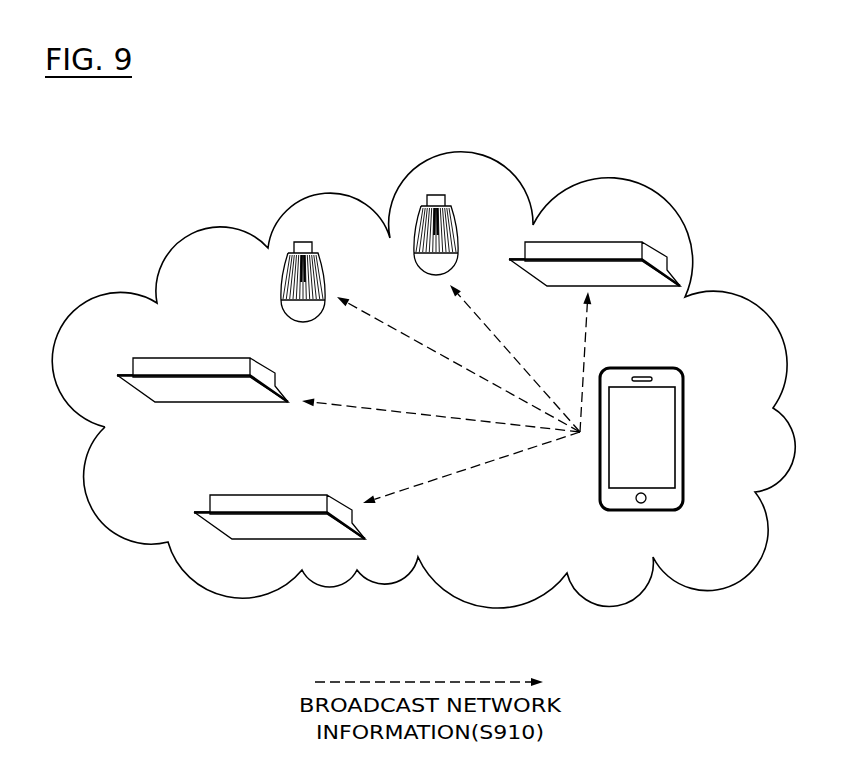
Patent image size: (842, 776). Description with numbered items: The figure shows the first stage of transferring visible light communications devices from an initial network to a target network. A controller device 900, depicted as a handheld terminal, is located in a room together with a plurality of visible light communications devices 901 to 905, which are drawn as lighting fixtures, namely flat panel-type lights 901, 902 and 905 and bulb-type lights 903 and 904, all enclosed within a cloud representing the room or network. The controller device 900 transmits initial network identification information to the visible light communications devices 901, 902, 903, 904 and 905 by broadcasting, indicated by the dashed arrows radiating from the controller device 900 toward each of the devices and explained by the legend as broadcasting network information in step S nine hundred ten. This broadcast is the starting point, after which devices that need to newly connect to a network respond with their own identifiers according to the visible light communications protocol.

The controller device 900 is at (632, 465).
The visible light communications device 901 is at (250, 525).
The visible light communications device 902 is at (185, 357).
The visible light communications device 903 is at (303, 240).
The visible light communications device 904 is at (435, 193).
The visible light communications device 905 is at (592, 252).